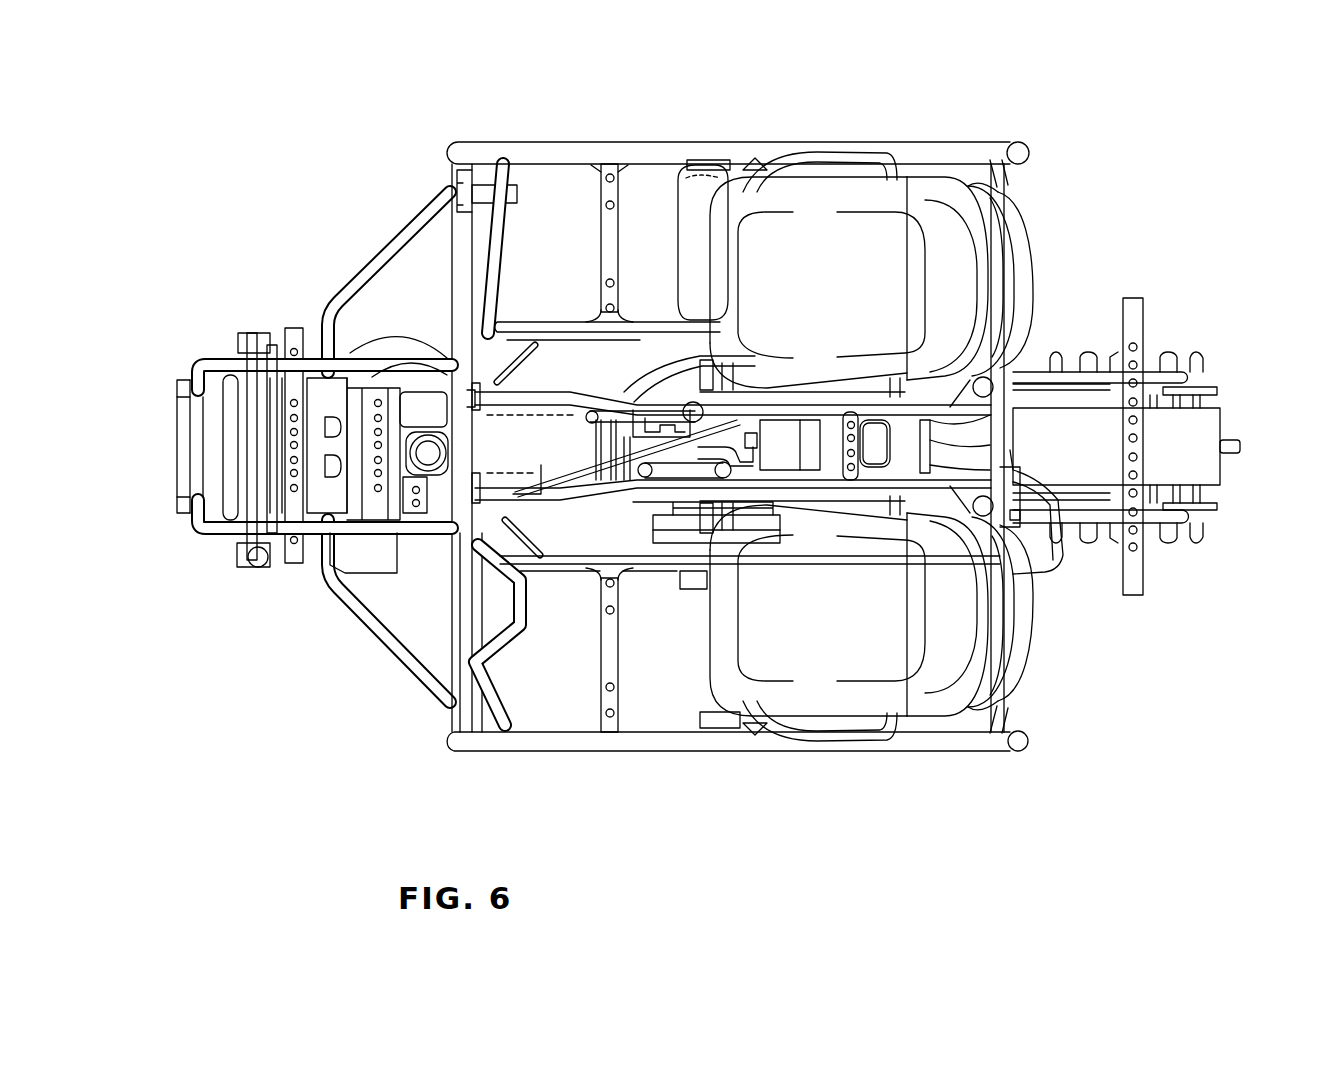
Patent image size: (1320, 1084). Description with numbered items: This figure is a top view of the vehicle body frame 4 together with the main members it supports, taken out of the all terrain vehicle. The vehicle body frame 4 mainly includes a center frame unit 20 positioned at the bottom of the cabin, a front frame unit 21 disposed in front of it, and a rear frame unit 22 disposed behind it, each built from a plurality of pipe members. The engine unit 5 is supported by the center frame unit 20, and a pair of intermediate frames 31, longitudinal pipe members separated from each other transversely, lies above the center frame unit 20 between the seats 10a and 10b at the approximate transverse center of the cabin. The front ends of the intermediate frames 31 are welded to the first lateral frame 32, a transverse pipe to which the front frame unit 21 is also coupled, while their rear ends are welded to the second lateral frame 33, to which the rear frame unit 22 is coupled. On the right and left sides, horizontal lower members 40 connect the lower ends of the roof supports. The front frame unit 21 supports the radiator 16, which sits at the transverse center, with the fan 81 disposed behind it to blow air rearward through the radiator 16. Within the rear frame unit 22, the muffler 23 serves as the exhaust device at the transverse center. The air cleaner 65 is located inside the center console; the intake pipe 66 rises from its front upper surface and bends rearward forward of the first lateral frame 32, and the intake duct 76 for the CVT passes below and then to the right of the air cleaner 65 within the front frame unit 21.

The vehicle body frame 4 is at (362, 198).
The engine unit 5 is at (628, 516).
The seat 10a is at (822, 696).
The seat 10b is at (816, 192).
The radiator 16 is at (240, 328).
The center frame unit 20 is at (560, 296).
The front frame unit 21 is at (290, 296).
The rear frame unit 22 is at (1100, 326).
The muffler 23 is at (1208, 425).
The intermediate frames 31 is at (587, 400).
The first lateral frame 32 is at (456, 279).
The second lateral frame 33 is at (1003, 432).
The lower members 40 is at (653, 151).
The air cleaner 65 is at (537, 424).
The intake pipe 66 is at (430, 470).
The intake duct 76 is at (417, 397).
The fan 81 is at (275, 417).